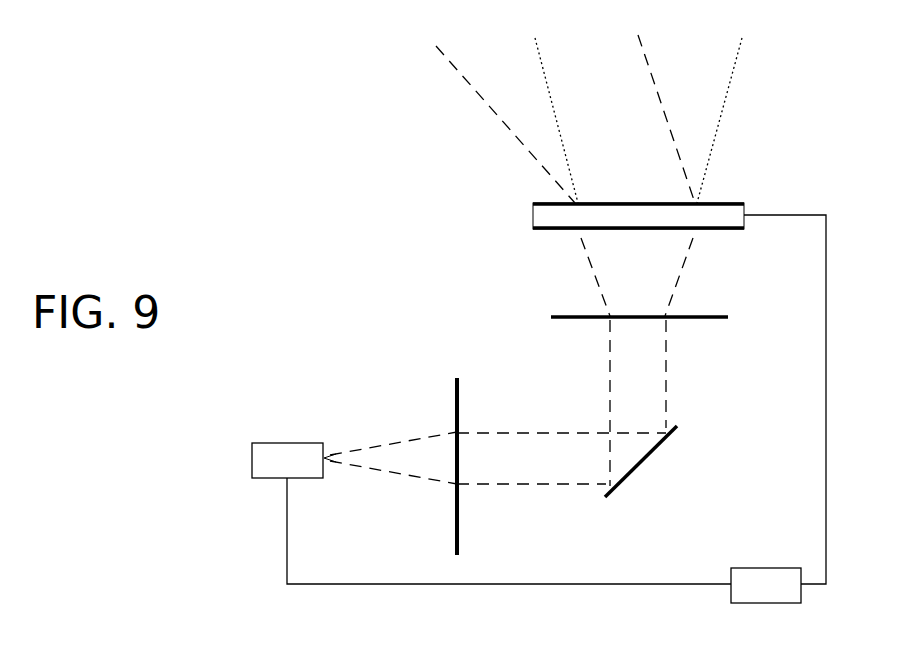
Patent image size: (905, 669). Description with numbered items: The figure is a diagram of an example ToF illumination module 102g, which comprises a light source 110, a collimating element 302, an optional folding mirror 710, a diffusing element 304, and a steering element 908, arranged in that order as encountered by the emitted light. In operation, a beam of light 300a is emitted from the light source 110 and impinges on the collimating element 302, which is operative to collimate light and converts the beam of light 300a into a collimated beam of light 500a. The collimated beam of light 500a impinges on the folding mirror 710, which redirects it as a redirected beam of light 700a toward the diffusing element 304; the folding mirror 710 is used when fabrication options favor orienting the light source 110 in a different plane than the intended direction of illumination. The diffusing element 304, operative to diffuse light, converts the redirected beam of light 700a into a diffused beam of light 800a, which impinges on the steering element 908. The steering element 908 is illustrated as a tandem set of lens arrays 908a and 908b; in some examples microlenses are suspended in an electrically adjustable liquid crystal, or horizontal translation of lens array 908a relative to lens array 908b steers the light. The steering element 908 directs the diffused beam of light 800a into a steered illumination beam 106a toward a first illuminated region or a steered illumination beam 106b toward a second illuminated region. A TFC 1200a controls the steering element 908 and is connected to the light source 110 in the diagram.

The ToF illumination module 102g is at (289, 192).
The steered illumination beam 106a is at (436, 46).
The steered illumination beam 106b is at (742, 38).
The steering element 908 is at (636, 194).
The lens array 908a is at (535, 228).
The lens array 908b is at (535, 204).
The diffused beam of light 800a is at (656, 269).
The diffusing element 304 is at (552, 317).
The redirected beam of light 700a is at (661, 382).
The folding mirror 710 is at (676, 428).
The collimated beam of light 500a is at (553, 483).
The beam of light 300a is at (398, 442).
The collimating element 302 is at (457, 378).
The light source 110 is at (303, 470).
The TFC 1200a is at (792, 595).